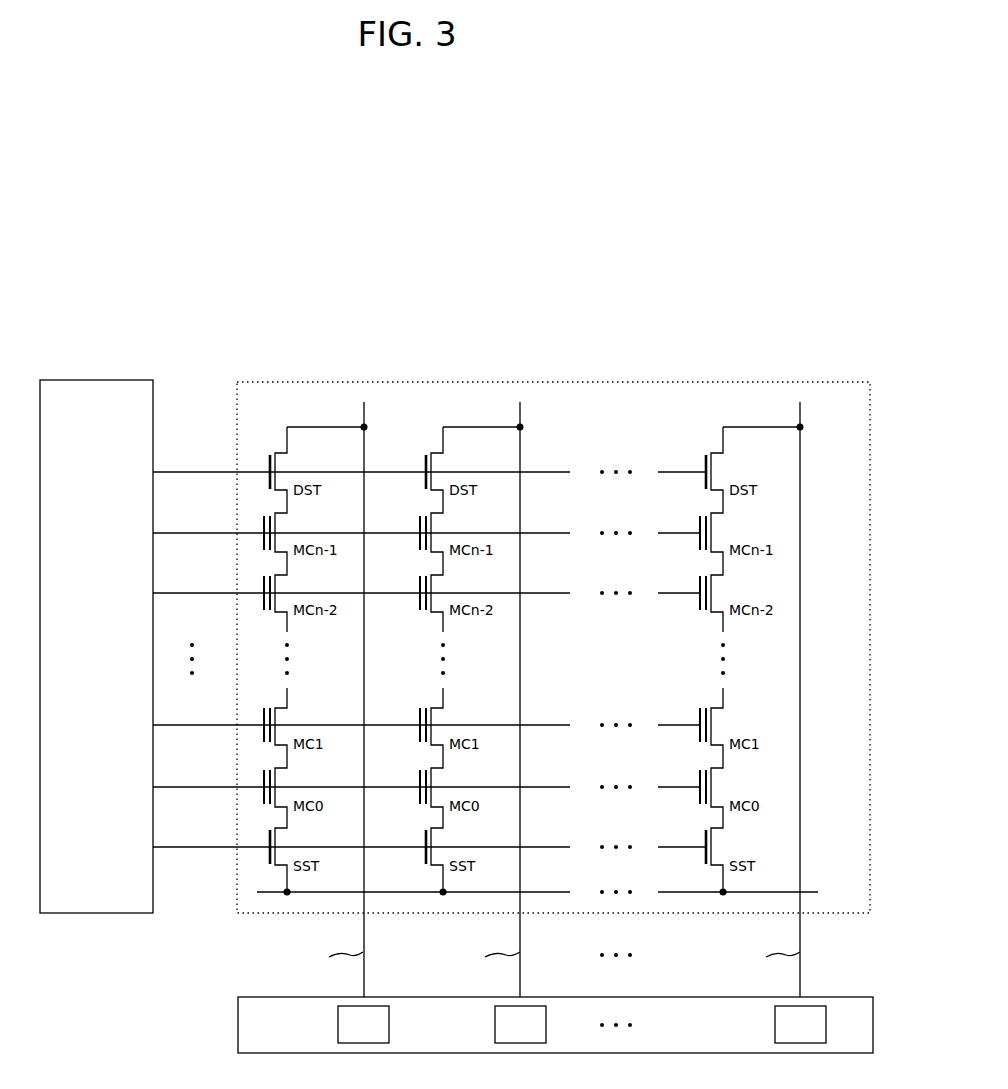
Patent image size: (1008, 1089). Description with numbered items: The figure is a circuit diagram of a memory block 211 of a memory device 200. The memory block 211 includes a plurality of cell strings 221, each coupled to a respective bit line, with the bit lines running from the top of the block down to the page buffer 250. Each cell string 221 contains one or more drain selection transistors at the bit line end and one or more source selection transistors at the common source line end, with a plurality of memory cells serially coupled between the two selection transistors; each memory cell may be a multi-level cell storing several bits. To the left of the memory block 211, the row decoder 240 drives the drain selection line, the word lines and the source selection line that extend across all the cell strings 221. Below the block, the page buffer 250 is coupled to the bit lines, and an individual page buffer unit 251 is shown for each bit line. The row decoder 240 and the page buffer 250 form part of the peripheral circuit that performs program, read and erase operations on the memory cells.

The memory device 200 is at (848, 289).
The memory block 211 is at (764, 382).
The cell string 221 is at (276, 435).
The row decoder 240 is at (100, 380).
The page buffer 250 is at (238, 1025).
The page buffer 251 is at (338, 1025).